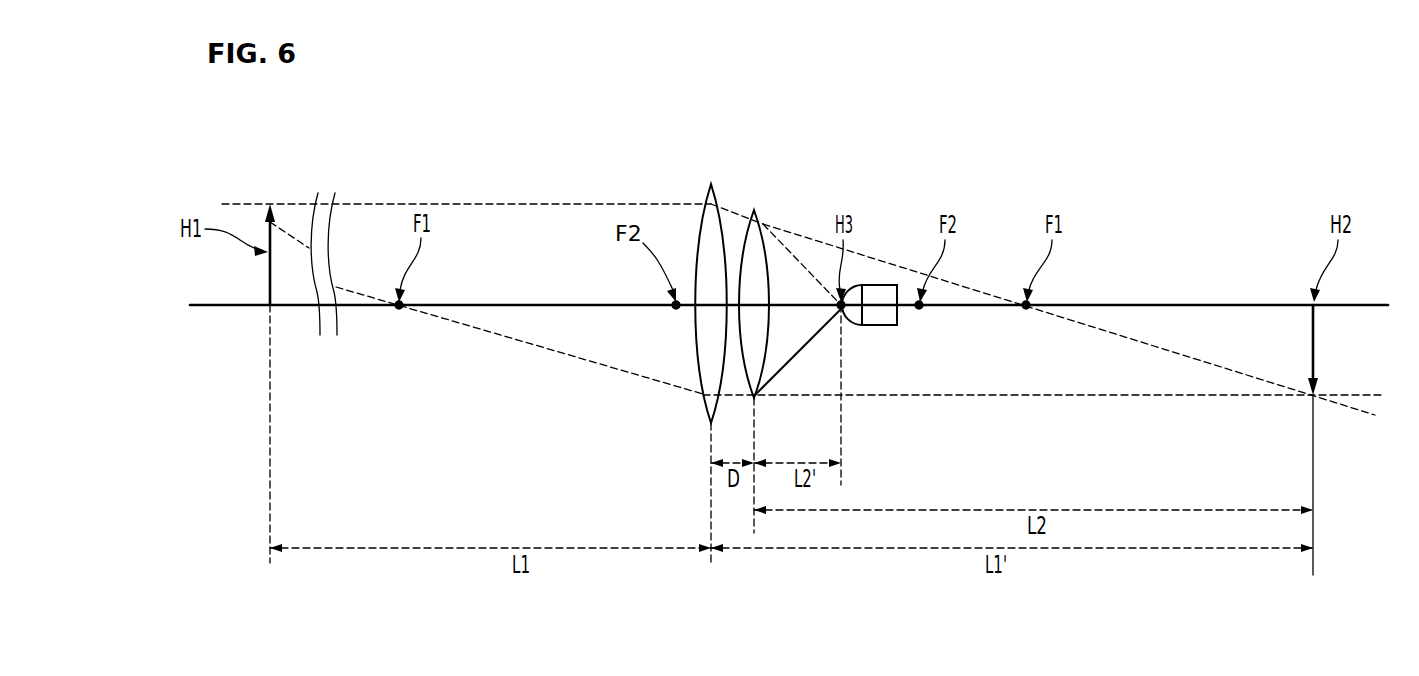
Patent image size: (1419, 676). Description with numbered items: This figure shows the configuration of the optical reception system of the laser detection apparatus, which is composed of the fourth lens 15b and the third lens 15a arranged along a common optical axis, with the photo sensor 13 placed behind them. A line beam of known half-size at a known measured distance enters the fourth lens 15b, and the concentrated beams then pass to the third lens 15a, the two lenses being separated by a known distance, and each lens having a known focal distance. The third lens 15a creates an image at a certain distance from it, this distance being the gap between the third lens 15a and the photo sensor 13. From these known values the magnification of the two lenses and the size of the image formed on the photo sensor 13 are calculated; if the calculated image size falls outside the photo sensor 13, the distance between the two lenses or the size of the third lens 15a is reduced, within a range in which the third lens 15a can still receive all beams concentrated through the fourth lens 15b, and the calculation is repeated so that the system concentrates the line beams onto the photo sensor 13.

The photo sensor 13 is at (878, 326).
The third lens 15a is at (764, 196).
The fourth lens 15b is at (718, 168).